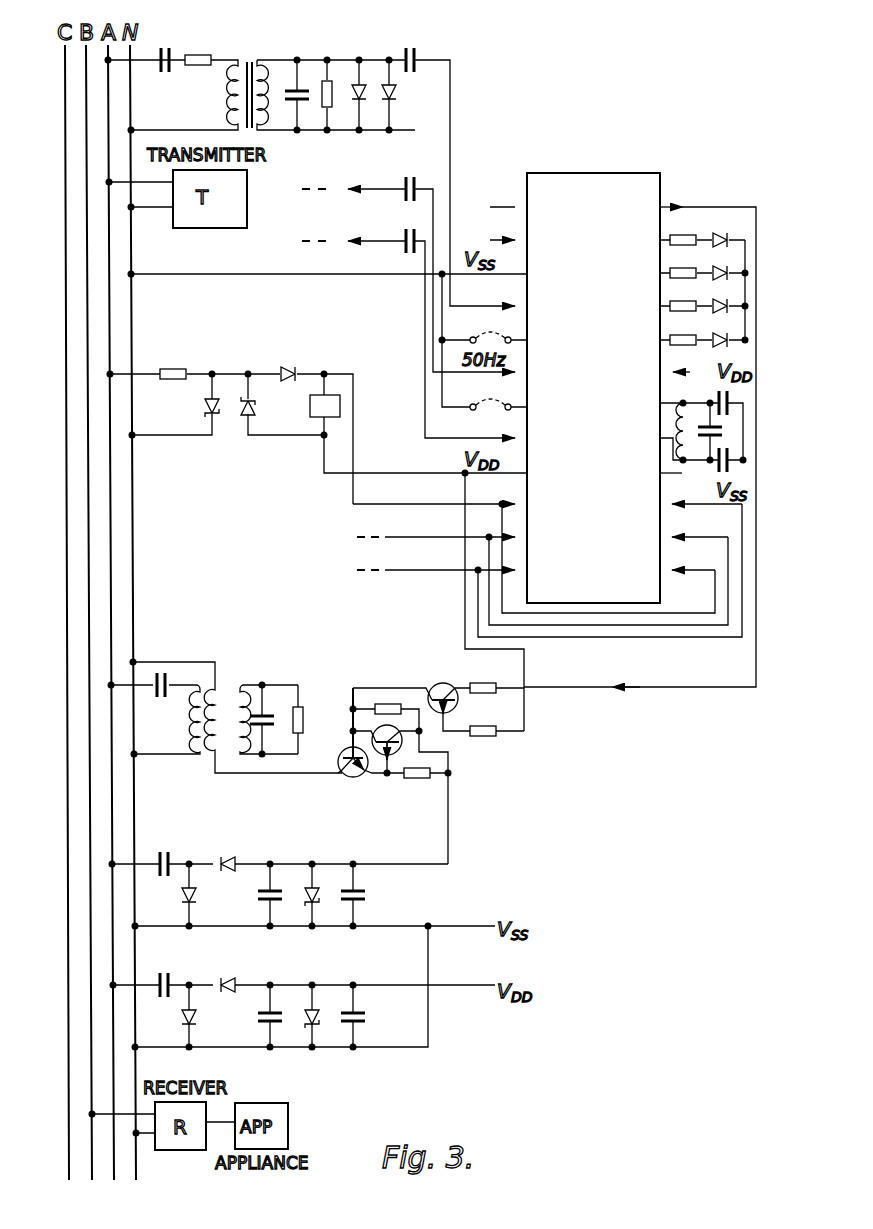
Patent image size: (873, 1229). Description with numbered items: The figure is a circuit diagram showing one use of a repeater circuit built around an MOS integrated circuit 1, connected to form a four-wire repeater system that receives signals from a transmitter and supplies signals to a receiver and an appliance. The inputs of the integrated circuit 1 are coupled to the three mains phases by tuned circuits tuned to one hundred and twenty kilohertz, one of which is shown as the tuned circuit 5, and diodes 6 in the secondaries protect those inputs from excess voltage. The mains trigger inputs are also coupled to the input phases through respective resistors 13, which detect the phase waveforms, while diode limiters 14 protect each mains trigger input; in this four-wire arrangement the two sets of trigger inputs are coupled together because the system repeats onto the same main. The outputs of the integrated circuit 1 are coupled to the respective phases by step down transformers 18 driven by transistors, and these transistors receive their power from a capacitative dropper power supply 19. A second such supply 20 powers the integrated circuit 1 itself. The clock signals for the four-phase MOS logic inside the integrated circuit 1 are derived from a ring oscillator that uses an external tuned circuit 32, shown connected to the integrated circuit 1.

The MOS integrated circuit 1 is at (593, 452).
The tuned circuit 5 is at (325, 72).
The diodes 6 is at (369, 105).
The resistors 13 is at (173, 368).
The diode limiters 14 is at (276, 369).
The step down transformers 18 is at (229, 676).
The capacitative dropper power supply 19 is at (253, 860).
The second supply 20 is at (253, 982).
The external tuned circuit 32 is at (700, 470).